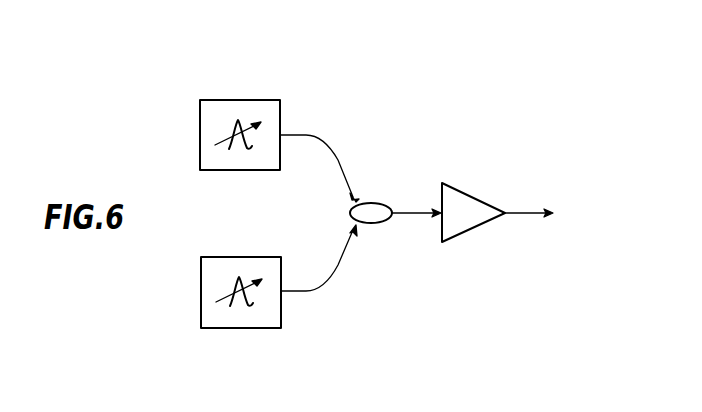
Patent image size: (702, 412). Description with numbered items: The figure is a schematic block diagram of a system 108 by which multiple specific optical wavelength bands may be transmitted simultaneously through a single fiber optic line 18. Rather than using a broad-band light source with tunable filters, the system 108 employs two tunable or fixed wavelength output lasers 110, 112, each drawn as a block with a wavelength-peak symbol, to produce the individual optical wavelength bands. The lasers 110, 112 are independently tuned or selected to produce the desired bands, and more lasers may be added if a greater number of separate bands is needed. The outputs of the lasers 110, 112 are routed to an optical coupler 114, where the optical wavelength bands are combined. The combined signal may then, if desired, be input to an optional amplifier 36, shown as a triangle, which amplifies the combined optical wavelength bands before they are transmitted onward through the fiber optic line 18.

The system 108 is at (396, 93).
The laser 110 is at (238, 100).
The laser 112 is at (281, 309).
The optical coupler 114 is at (373, 203).
The amplifier 36 is at (486, 200).
The fiber optic line 18 is at (522, 214).